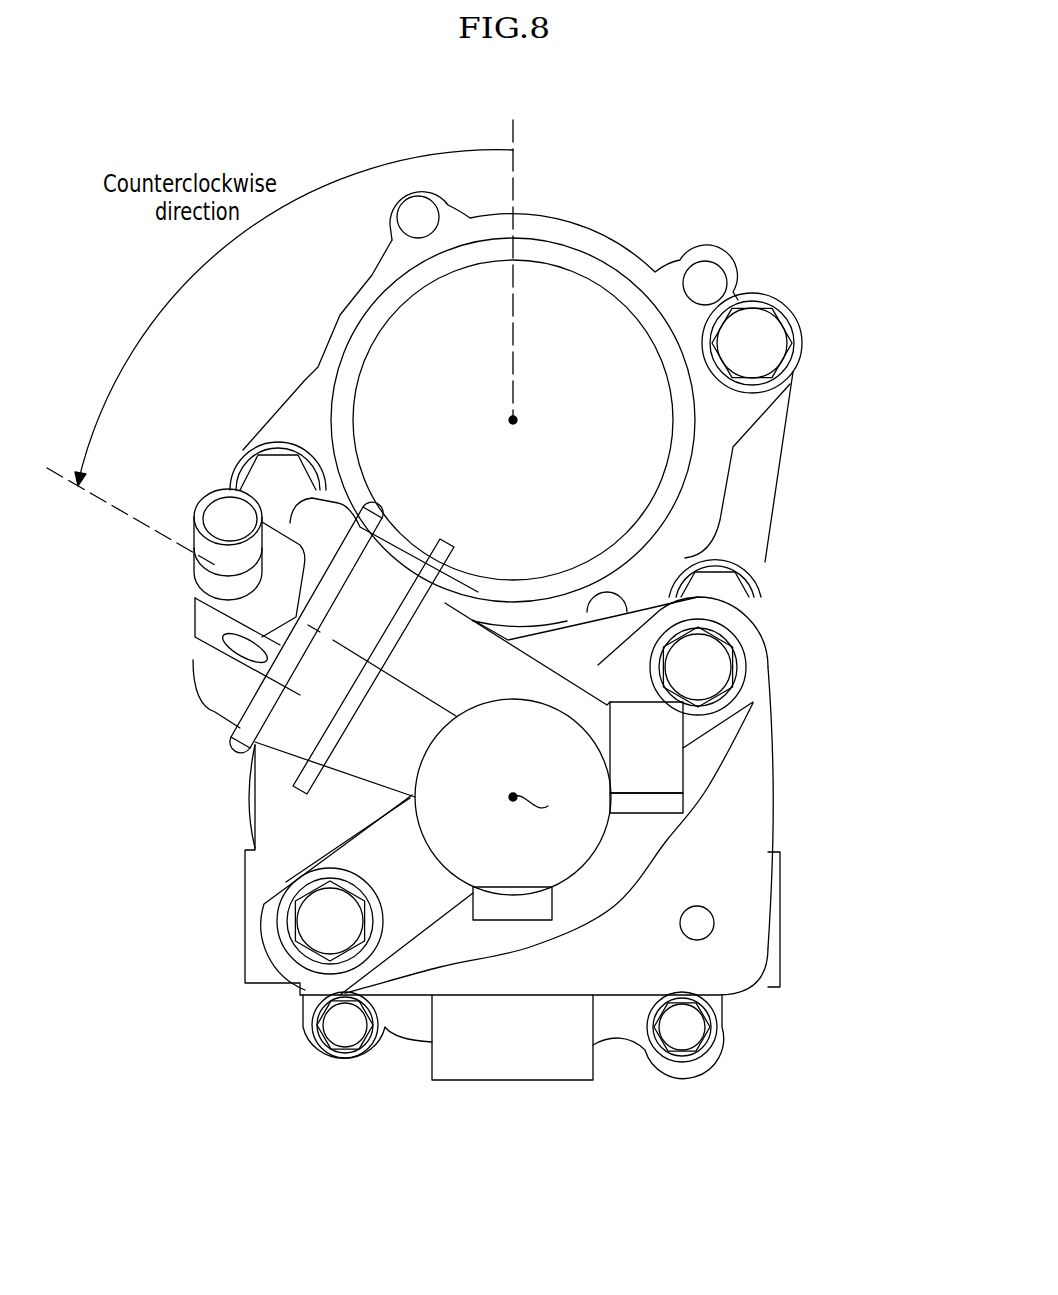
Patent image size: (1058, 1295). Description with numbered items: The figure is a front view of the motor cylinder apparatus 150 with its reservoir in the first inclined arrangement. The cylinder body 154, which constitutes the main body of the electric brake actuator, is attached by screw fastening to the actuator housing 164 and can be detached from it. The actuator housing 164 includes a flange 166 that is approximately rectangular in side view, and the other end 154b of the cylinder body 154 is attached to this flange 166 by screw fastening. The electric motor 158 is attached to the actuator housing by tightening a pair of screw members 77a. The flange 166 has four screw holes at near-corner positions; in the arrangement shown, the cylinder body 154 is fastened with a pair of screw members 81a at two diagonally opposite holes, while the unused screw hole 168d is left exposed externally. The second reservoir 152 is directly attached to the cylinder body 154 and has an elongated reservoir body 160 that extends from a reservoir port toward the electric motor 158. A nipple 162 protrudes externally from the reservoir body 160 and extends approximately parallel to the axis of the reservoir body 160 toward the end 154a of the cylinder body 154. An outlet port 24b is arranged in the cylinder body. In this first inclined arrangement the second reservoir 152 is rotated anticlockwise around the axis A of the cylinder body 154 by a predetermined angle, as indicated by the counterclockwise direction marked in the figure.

The motor cylinder apparatus 150 is at (775, 197).
The electric motor 158 is at (590, 277).
The screw members 77a is at (765, 345).
The actuator housing 164 is at (784, 482).
The nipple 162 is at (226, 503).
The reservoir body 160 is at (210, 597).
The second reservoir 152 is at (200, 645).
The cylinder body 154 is at (583, 863).
The end of the cylinder body 154a is at (510, 858).
The other end of the cylinder body 154b is at (695, 777).
The outlet port 24b is at (683, 731).
The screw members 81a is at (713, 665).
The flange 166 is at (780, 897).
The screw hole 168d is at (703, 927).